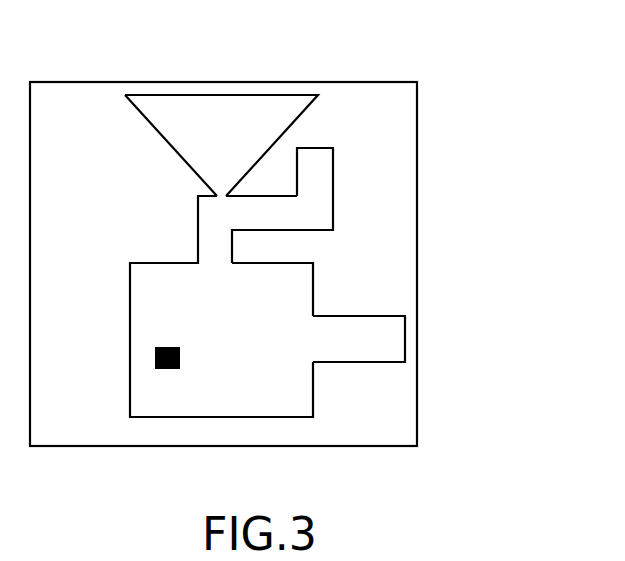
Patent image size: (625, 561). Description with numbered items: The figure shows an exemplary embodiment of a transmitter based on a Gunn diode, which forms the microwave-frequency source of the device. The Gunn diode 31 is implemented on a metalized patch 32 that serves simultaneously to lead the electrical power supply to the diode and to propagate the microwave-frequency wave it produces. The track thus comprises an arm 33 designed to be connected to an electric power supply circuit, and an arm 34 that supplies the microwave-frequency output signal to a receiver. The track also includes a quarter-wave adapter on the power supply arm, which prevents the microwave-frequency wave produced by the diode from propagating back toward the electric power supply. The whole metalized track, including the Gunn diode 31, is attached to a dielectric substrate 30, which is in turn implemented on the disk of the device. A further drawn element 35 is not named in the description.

The dielectric substrate 30 is at (92, 115).
The Gunn diode 31 is at (173, 377).
The metalized patch 32 is at (300, 285).
The arm 33 is at (323, 176).
The arm 34 is at (396, 339).
The triangular radiating element 35 is at (230, 110).